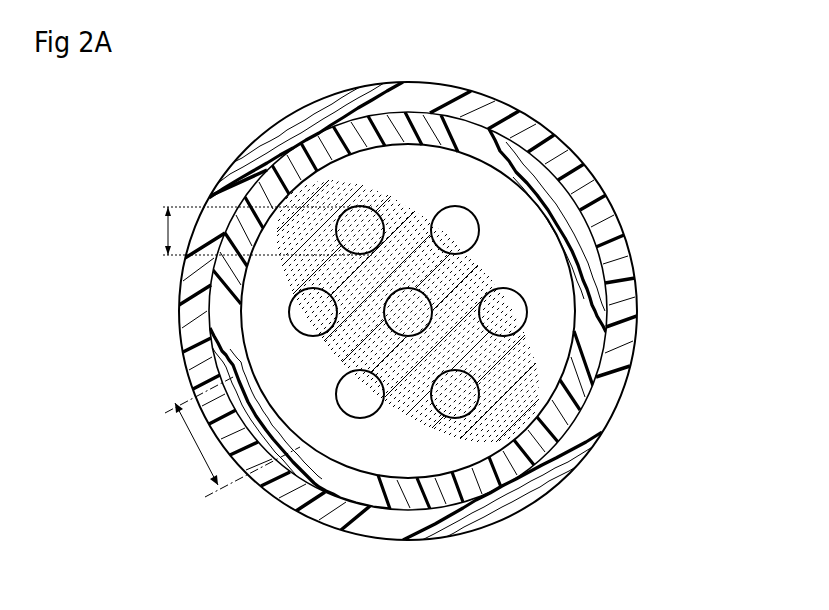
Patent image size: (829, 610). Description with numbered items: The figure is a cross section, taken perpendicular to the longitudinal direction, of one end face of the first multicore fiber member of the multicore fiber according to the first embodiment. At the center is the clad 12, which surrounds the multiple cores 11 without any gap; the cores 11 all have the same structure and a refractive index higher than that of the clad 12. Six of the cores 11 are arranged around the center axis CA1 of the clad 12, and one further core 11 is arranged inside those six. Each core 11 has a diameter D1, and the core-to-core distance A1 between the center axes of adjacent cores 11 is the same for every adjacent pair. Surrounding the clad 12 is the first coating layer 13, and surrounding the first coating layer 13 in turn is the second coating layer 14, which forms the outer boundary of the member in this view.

The cores 11 is at (455, 562).
The clad 12 is at (512, 205).
The first coating layer 13 is at (553, 203).
The second coating layer 14 is at (597, 215).
The center axis CA1 is at (408, 313).
The diameter D1 is at (247, 231).
The core-to-core distance A1 is at (196, 448).